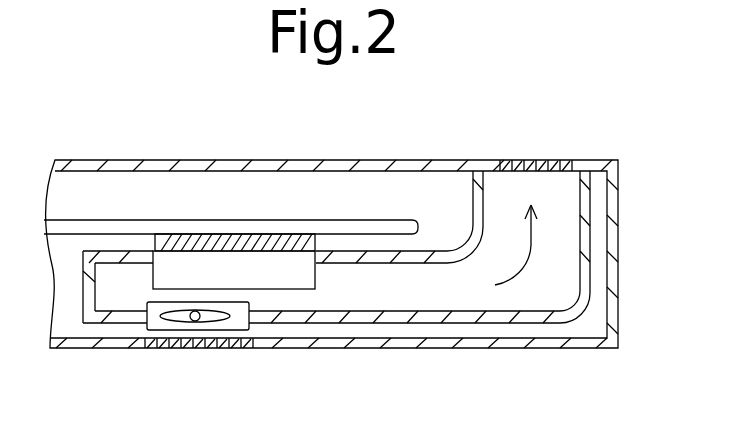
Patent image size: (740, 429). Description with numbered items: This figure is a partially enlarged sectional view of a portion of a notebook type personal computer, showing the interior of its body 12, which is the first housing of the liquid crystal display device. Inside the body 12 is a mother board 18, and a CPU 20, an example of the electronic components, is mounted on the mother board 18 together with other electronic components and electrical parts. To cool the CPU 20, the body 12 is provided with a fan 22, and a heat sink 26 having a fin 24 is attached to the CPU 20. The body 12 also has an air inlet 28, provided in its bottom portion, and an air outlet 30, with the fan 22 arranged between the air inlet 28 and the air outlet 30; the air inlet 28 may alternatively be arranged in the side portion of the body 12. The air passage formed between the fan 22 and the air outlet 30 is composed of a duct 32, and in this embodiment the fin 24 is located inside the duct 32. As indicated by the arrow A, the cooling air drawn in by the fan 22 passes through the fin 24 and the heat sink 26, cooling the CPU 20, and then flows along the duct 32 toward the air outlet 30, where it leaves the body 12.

The body 12 is at (318, 161).
The mother board 18 is at (100, 226).
The CPU 20 is at (221, 243).
The fan 22 is at (240, 320).
The fin 24 is at (253, 270).
The heat sink 26 is at (168, 242).
The air inlet 28 is at (180, 349).
The air outlet 30 is at (538, 161).
The duct 32 is at (427, 314).
The arrow A is at (532, 243).